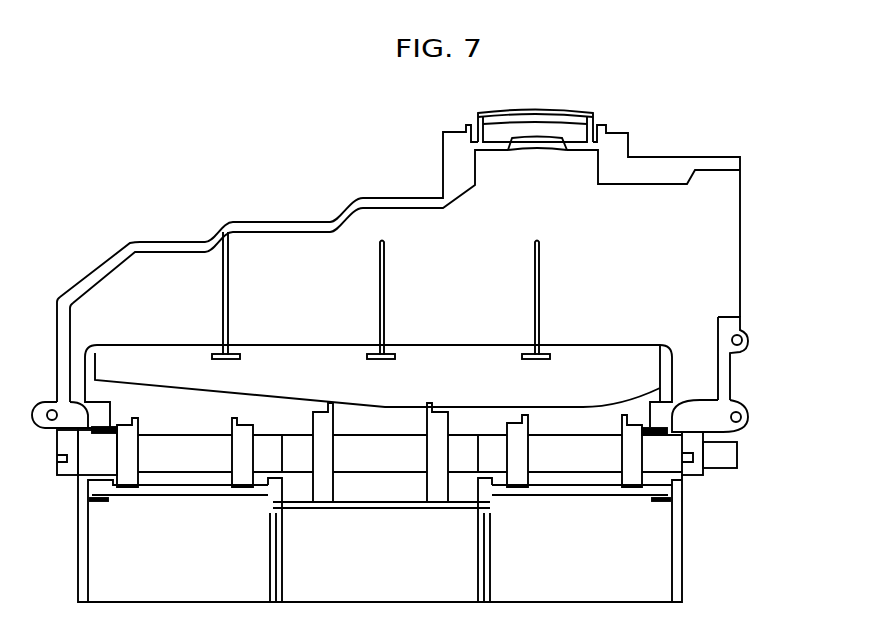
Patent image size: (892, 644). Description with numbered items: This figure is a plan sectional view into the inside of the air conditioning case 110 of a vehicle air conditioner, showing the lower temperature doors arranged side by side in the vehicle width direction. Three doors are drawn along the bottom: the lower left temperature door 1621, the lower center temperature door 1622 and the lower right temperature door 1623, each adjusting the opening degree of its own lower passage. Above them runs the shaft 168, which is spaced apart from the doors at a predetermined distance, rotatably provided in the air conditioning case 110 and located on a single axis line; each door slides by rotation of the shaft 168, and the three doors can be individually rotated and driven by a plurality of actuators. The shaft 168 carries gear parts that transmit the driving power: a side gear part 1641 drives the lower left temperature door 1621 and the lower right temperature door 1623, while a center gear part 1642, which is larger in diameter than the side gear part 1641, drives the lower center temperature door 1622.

The air conditioning case 110 is at (685, 540).
The shaft 168 is at (602, 455).
The lower left temperature door 1621 is at (187, 496).
The lower center temperature door 1622 is at (380, 510).
The lower right temperature door 1623 is at (572, 496).
The side gear part 1641 is at (243, 443).
The center gear part 1642 is at (438, 450).